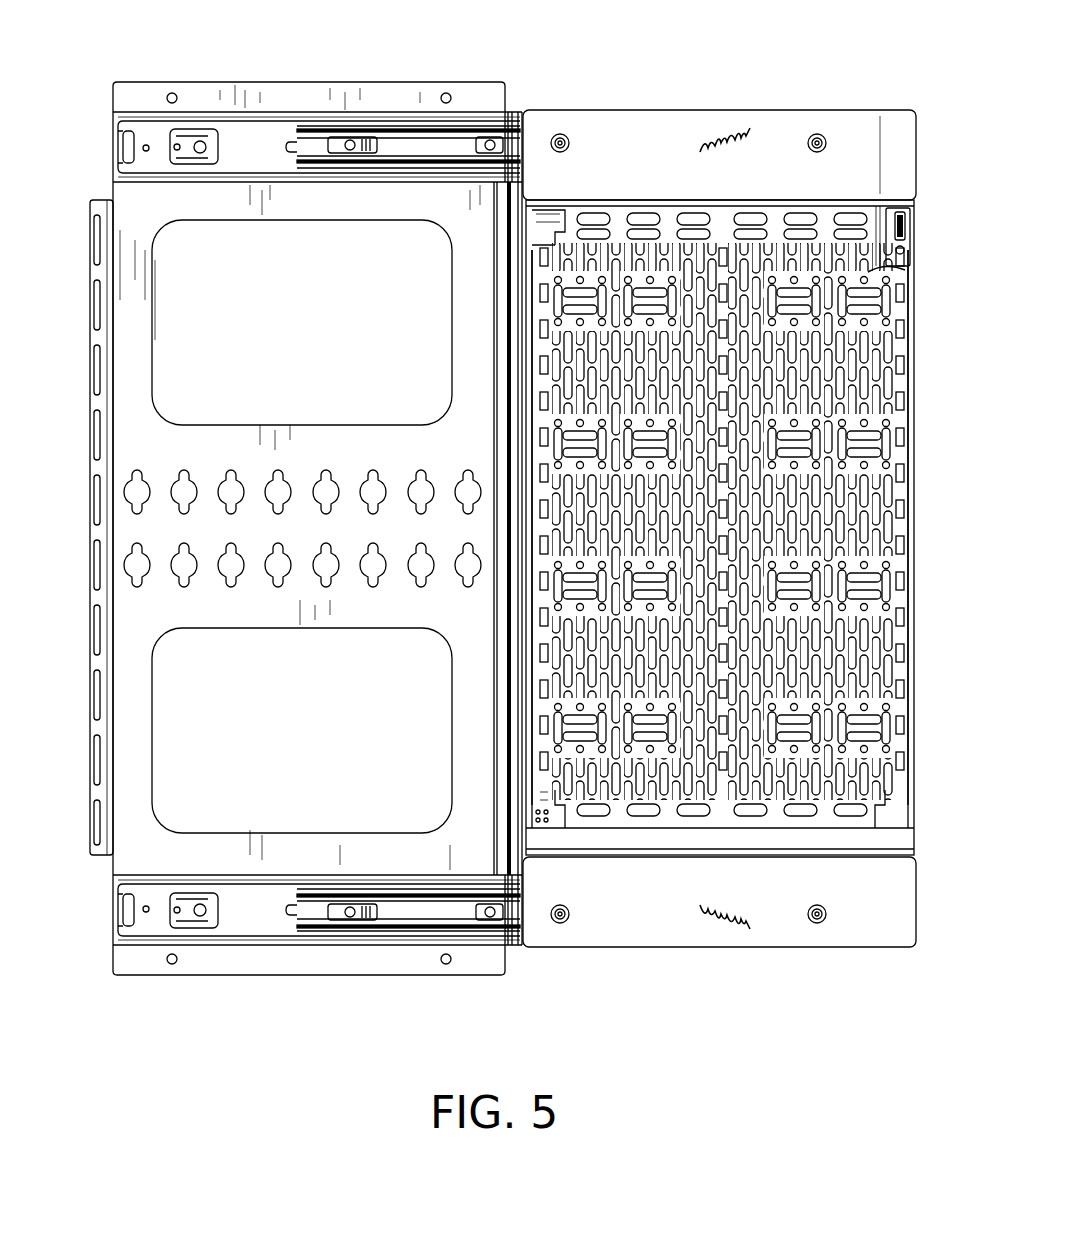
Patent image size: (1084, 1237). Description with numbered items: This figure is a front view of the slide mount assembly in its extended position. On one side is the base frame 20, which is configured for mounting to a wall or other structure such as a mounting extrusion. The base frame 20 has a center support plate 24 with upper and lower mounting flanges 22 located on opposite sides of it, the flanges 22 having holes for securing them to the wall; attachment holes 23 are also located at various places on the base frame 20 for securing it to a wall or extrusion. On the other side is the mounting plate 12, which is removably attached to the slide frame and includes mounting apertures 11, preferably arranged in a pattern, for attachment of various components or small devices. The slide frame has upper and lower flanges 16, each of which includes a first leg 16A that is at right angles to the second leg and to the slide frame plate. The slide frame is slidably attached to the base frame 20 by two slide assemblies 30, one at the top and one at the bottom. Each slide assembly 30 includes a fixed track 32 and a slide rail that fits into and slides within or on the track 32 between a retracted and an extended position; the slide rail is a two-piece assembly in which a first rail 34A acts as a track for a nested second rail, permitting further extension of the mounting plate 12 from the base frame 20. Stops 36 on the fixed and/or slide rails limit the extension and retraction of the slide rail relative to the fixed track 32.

The mounting apertures 11 is at (893, 358).
The mounting plate 12 is at (895, 268).
The upper and lower flanges 16 is at (626, 140).
The first leg 16A is at (883, 152).
The base frame 20 is at (78, 532).
The mounting flange 22 is at (325, 95).
The attachment holes 23 is at (128, 574).
The center support plate 24 is at (130, 685).
The slide assembly 30 is at (397, 98).
The fixed track 32 is at (242, 115).
The first rail 34A is at (513, 118).
The stops 36 is at (120, 148).